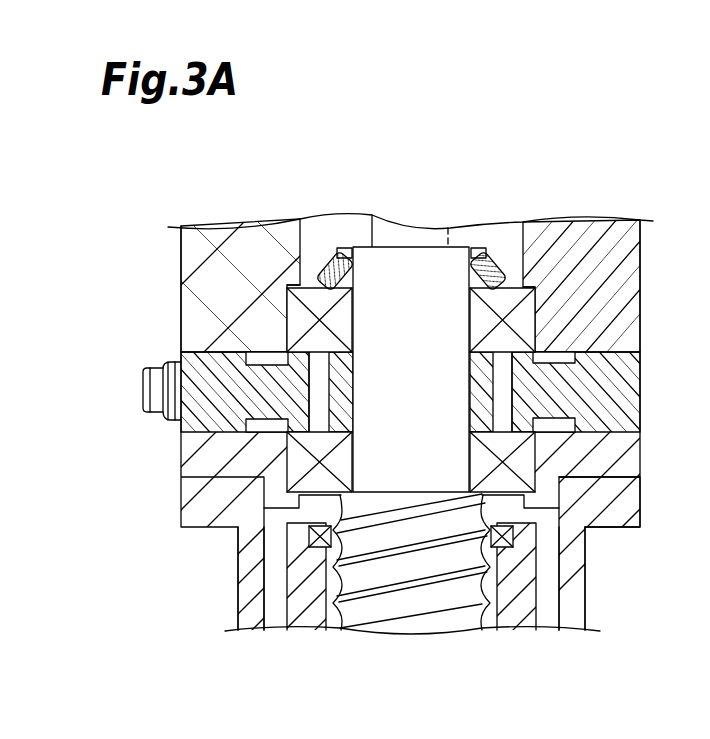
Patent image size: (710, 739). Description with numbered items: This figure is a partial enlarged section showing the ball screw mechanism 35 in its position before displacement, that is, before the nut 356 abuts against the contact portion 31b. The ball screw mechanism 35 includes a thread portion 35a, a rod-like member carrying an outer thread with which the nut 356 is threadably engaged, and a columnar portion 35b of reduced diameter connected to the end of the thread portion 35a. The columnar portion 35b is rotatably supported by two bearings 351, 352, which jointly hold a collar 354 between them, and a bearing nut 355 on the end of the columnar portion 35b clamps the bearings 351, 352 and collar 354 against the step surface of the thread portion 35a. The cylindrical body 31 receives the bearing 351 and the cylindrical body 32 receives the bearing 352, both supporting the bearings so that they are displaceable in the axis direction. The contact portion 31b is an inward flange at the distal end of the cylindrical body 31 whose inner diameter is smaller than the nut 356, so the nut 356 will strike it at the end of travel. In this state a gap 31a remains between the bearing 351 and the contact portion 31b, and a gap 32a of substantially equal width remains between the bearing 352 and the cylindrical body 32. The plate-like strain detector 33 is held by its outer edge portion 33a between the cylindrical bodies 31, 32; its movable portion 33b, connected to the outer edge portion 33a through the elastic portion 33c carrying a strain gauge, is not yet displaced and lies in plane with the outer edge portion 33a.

The cylindrical body 31 is at (197, 462).
The gap 31a is at (550, 498).
The contact portion 31b is at (555, 532).
The cylindrical body 32 is at (186, 273).
The gap 32a is at (537, 288).
The strain detector 33 is at (141, 380).
The outer edge portion 33a is at (600, 408).
The movable portion 33b is at (523, 388).
The elastic portion 33c is at (273, 370).
The ball screw mechanism 35 is at (352, 247).
The thread portion 35a is at (427, 562).
The columnar portion 35b is at (405, 265).
The bearing 351 is at (297, 461).
The bearing 352 is at (287, 308).
The collar 354 is at (338, 400).
The bearing nut 355 is at (492, 262).
The nut 356 is at (318, 550).